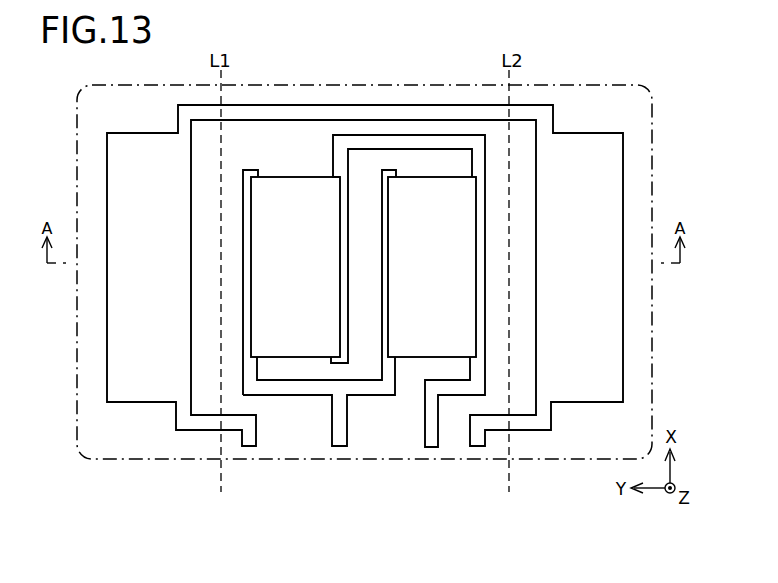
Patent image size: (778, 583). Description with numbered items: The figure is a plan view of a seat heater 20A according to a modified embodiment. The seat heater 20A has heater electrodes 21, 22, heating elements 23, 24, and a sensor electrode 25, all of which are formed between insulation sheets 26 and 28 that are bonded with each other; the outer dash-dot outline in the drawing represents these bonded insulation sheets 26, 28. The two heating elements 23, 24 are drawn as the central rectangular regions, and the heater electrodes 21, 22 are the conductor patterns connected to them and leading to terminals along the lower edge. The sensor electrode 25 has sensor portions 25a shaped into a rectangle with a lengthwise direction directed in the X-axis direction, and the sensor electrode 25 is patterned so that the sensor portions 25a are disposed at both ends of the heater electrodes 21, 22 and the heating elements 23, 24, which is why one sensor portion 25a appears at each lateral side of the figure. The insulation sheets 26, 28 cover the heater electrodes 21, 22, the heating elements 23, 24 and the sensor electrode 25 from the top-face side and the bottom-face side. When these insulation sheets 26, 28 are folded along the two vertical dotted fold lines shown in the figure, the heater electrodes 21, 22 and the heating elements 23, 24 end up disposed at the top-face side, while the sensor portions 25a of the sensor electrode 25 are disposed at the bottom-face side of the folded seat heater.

The seat heater 20A is at (364, 281).
The heater electrode 21 is at (334, 447).
The heater electrode 22 is at (429, 447).
The heating element 23 is at (292, 177).
The heating element 24 is at (420, 177).
The sensor electrode 25 is at (365, 307).
The sensor portion 25a is at (142, 403).
The insulation sheet 26 is at (364, 303).
The insulation sheet 28 is at (364, 303).